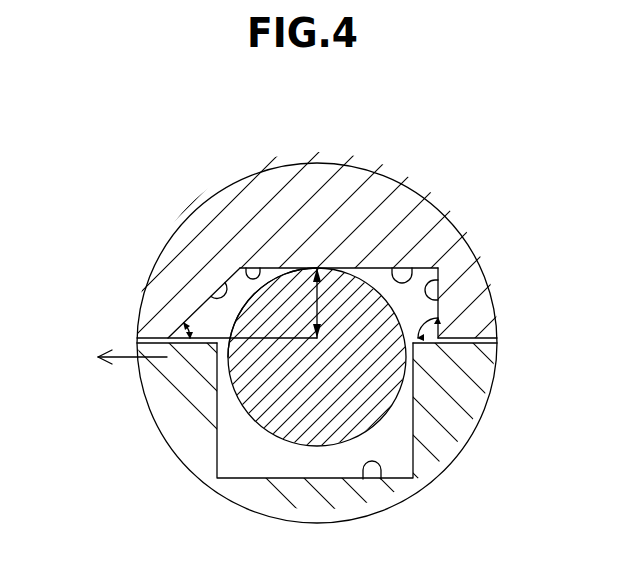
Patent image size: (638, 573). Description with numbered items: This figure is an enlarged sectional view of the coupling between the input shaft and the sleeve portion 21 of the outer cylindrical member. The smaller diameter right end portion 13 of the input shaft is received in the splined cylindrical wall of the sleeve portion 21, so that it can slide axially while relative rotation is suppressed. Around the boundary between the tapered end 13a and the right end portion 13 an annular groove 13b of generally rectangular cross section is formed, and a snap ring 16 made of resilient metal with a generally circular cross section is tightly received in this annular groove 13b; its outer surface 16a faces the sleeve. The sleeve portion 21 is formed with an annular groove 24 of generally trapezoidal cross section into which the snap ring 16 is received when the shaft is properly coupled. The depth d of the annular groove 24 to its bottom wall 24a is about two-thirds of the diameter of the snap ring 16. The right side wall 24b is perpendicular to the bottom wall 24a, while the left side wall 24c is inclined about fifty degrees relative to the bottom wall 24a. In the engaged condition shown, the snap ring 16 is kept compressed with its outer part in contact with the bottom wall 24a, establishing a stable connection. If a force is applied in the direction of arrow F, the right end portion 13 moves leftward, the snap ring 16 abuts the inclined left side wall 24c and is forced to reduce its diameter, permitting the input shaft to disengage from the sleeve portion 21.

The sleeve portion 21 is at (480, 242).
The annular groove 24 is at (403, 283).
The bottom wall 24a is at (265, 270).
The right side wall 24b is at (441, 283).
The left side wall 24c is at (205, 298).
The right end portion 13 is at (140, 411).
The tapered end 13a is at (440, 455).
The annular groove 13b is at (382, 465).
The snap ring 16 is at (375, 378).
The spherical surface of ball 16a is at (250, 302).
The depth d is at (337, 284).
The force direction arrow F is at (127, 358).